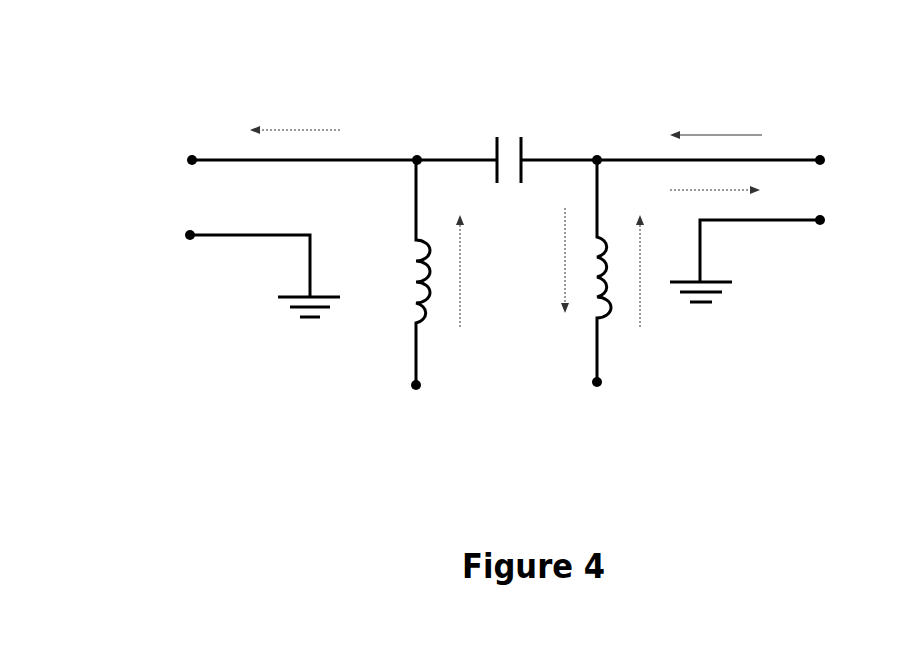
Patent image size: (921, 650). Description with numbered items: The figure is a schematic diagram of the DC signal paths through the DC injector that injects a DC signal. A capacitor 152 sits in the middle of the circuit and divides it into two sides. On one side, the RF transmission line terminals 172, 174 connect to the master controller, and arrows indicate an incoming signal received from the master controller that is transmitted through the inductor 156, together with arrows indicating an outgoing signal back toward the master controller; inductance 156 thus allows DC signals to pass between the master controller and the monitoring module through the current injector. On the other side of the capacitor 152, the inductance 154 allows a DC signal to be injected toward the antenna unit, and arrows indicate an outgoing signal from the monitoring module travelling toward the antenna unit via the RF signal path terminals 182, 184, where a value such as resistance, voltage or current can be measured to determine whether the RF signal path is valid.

The capacitor 152 is at (505, 130).
The inductance 154 is at (438, 322).
The inductance 156 is at (613, 315).
The RF transmission line terminal 172 is at (853, 163).
The RF transmission line terminal 174 is at (780, 256).
The RF signal path terminal 182 is at (159, 162).
The RF signal path terminal 184 is at (231, 272).